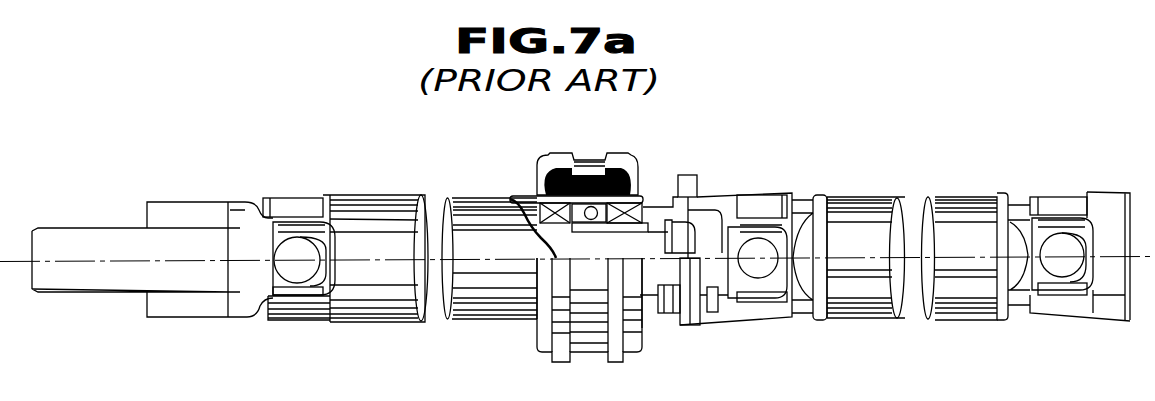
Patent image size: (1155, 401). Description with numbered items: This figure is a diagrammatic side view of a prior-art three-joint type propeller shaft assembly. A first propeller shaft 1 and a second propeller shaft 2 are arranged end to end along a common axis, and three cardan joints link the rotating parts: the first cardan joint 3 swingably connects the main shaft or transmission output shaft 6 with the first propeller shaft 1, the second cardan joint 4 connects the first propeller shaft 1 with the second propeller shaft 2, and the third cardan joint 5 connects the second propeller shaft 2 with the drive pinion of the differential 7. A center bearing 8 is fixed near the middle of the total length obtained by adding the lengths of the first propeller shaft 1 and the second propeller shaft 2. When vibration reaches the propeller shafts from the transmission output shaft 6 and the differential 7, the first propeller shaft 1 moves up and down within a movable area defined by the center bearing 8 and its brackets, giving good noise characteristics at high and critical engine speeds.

The first propeller shaft 1 is at (502, 327).
The second propeller shaft 2 is at (925, 330).
The first cardan joint 3 is at (308, 193).
The second cardan joint 4 is at (767, 193).
The third cardan joint 5 is at (1063, 193).
The transmission output shaft 6 is at (82, 295).
The differential 7 is at (1088, 323).
The center bearing 8 is at (641, 185).